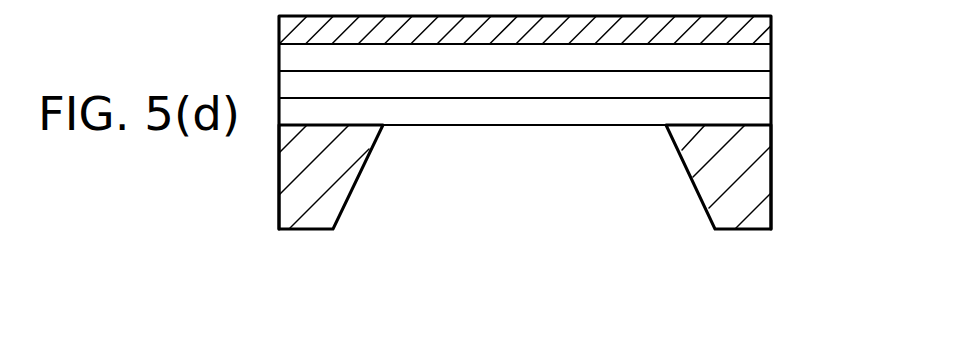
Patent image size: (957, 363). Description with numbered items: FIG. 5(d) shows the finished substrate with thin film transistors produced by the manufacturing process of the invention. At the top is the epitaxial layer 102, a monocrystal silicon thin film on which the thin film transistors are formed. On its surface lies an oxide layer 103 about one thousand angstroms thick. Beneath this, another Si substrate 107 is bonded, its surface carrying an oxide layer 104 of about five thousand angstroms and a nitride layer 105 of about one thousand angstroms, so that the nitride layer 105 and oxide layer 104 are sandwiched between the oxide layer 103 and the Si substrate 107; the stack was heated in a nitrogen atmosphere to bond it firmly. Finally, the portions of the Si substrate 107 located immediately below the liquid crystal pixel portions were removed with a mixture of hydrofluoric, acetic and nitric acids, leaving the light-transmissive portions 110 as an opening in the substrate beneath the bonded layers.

The epitaxial layer 102 is at (760, 42).
The oxide layer 103 is at (758, 60).
The nitride layer 105 is at (760, 87).
The oxide layer 104 is at (762, 115).
The Si substrate 107 is at (765, 182).
The light-transmissive portions 110 is at (517, 142).